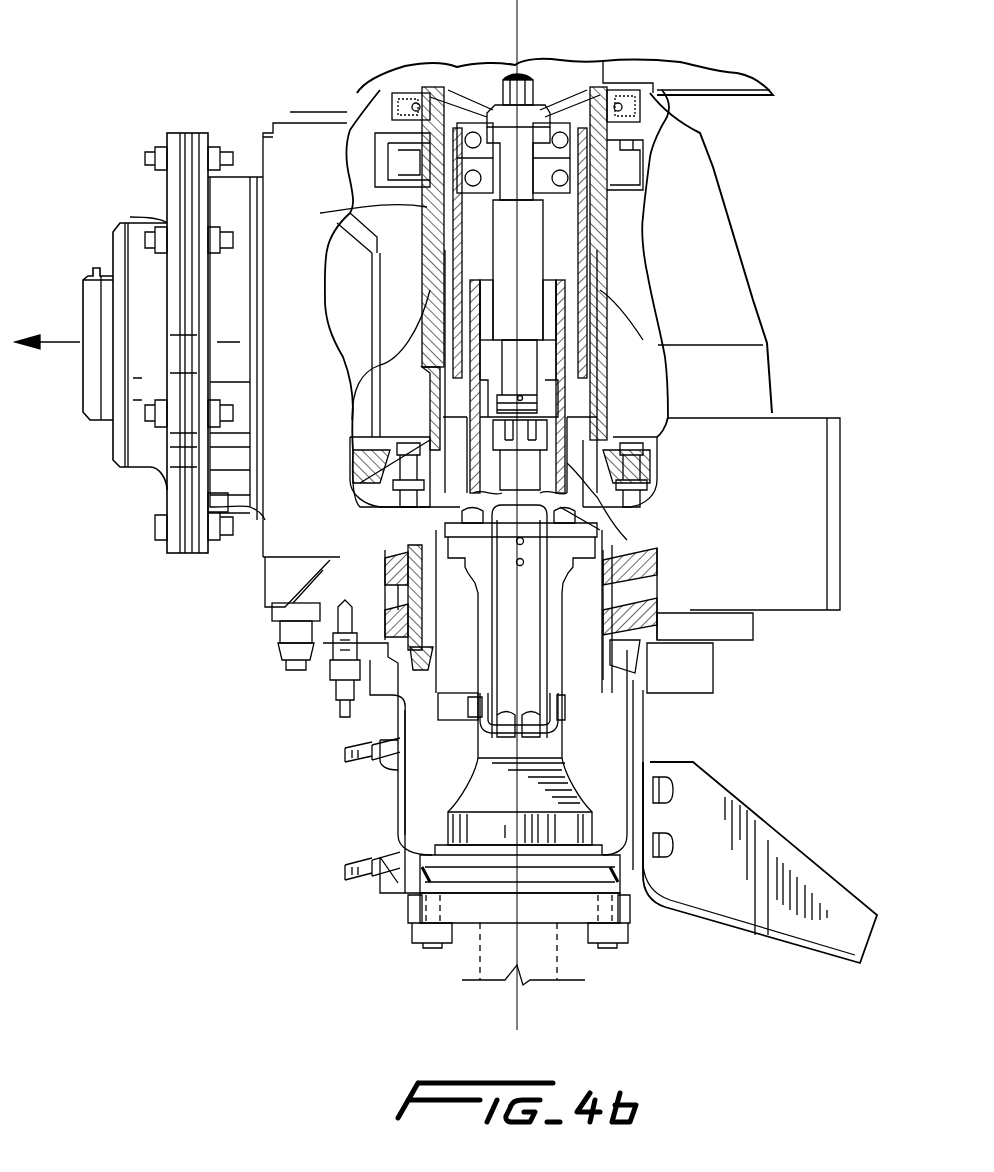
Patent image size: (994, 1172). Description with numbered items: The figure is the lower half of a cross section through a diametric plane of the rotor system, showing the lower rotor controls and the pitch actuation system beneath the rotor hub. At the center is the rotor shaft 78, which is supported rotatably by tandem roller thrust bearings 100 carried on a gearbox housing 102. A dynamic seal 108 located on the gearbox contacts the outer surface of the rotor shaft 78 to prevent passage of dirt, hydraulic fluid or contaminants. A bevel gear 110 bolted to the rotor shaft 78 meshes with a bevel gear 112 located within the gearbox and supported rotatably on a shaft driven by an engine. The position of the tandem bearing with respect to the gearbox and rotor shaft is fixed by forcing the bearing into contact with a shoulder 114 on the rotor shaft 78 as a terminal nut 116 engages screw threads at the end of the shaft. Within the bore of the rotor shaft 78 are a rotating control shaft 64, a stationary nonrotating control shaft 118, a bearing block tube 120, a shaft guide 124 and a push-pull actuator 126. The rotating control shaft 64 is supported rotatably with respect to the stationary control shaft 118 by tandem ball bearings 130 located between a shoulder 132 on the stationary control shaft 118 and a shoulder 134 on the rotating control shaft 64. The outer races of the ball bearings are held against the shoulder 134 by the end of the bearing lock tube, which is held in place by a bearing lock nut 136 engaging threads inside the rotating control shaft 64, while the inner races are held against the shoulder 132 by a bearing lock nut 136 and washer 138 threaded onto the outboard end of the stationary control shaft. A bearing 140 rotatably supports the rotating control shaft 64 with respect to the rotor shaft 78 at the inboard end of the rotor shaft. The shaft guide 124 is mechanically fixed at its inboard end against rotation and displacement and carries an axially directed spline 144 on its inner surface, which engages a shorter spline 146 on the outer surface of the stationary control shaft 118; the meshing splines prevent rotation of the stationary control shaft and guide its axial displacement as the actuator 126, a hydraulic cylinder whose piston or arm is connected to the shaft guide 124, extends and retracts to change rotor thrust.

The rotating control shaft 64 is at (438, 210).
The rotor shaft 78 is at (583, 262).
The tandem roller thrust bearings 100 is at (400, 613).
The gearbox housing 102 is at (290, 572).
The dynamic seal 108 is at (637, 85).
The bevel gear 110 is at (380, 455).
The bevel gear 112 is at (383, 447).
The shoulder 114 is at (395, 580).
The terminal nut 116 is at (628, 678).
The stationary control shaft 118 is at (457, 235).
The bearing block tube 120 is at (470, 297).
The shaft guide 124 is at (590, 515).
The push-pull actuator 126 is at (545, 448).
The tandem ball bearings 130 is at (645, 172).
The shoulder 132 is at (610, 223).
The shoulder 134 is at (395, 92).
The bearing lock nut 136 is at (540, 103).
The washer 138 is at (493, 122).
The bearing 140 is at (603, 375).
The spline 144 is at (565, 300).
The spline 146 is at (585, 335).